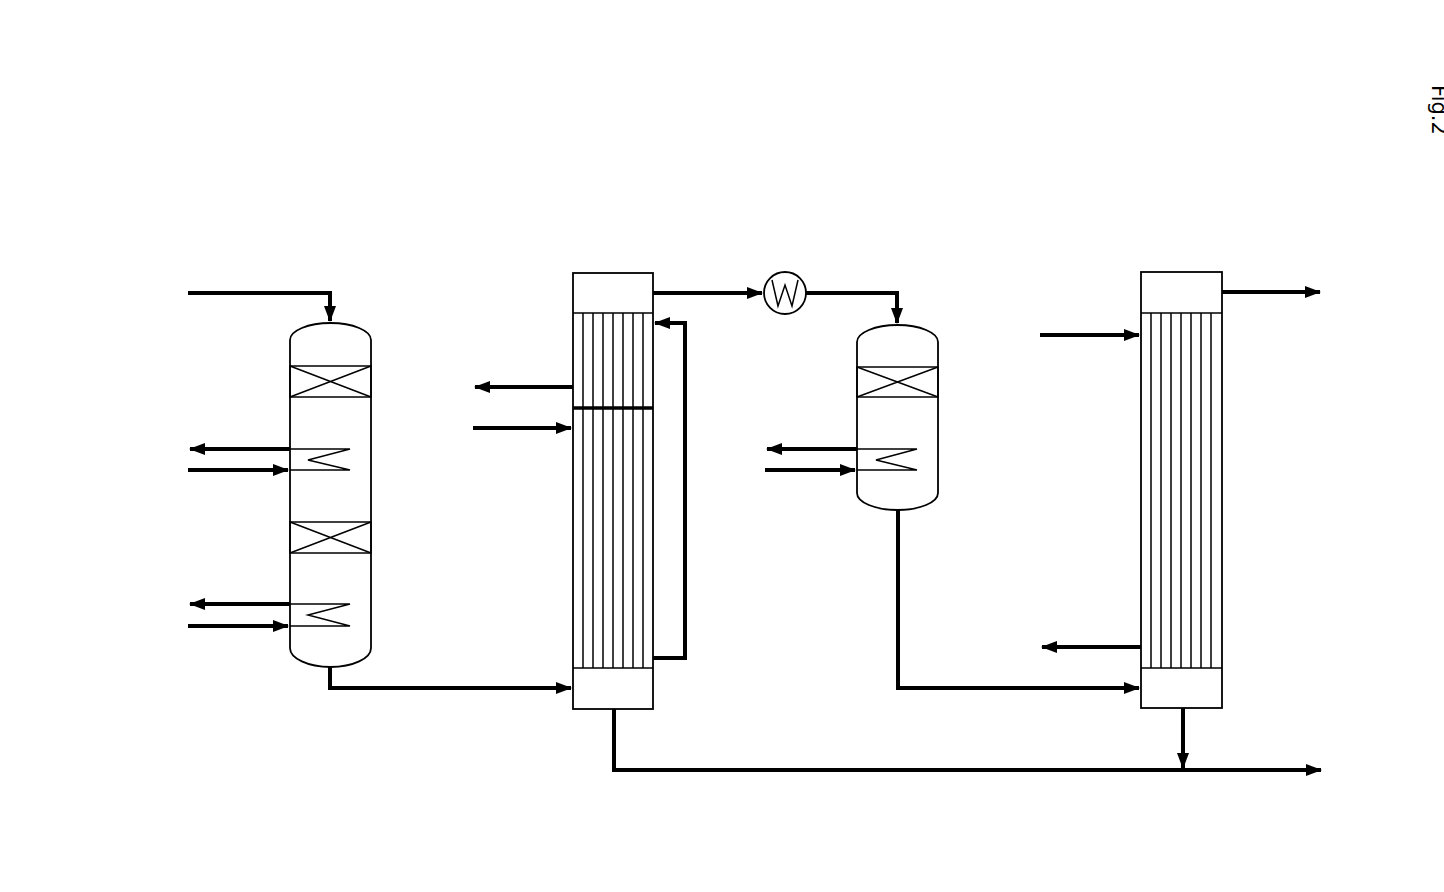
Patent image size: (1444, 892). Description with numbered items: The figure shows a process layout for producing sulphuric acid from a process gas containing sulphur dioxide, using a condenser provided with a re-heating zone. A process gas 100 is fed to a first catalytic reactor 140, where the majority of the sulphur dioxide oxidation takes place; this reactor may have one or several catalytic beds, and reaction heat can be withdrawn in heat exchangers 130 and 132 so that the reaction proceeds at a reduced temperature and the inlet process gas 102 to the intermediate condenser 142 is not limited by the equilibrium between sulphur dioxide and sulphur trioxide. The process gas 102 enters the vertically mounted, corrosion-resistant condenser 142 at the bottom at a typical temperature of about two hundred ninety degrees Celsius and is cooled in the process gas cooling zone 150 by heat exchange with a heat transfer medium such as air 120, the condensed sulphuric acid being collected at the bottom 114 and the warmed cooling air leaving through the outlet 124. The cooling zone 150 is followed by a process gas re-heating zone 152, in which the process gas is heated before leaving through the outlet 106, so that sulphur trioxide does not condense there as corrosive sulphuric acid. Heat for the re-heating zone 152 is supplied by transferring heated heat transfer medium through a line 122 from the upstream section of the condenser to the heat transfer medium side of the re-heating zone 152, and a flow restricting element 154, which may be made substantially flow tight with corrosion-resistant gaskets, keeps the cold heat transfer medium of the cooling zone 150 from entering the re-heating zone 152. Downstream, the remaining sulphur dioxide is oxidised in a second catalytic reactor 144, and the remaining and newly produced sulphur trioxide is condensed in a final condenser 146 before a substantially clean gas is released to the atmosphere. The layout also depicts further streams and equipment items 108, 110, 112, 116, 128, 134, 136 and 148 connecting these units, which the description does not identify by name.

The process gas 100 is at (258, 290).
The inlet process gas 102 is at (475, 687).
The outlet 106 is at (722, 292).
The cooled effluent stream 108 is at (860, 292).
The separator bottoms stream 110 is at (985, 687).
The overhead vapor stream 112 is at (1278, 291).
The bottom 114 is at (757, 770).
The stripper bottoms stream 116 is at (1180, 760).
The air 120 is at (500, 428).
The line 122 is at (688, 645).
The cooling air outlet 124 is at (485, 386).
The stripping gas inlet 128 is at (1097, 334).
The heat exchanger 130 is at (228, 447).
The heat exchanger 132 is at (243, 603).
The cooling medium stream 134 is at (818, 447).
The stripper outlet stream 136 is at (1090, 646).
The first catalytic reactor 140 is at (374, 584).
The intermediate condenser 142 is at (575, 628).
The second catalytic reactor 144 is at (938, 440).
The final condenser 146 is at (1141, 487).
The heat exchanger 148 is at (775, 272).
The process gas cooling zone 150 is at (584, 491).
The process gas re-heating zone 152 is at (583, 350).
The flow restricting element 154 is at (590, 405).